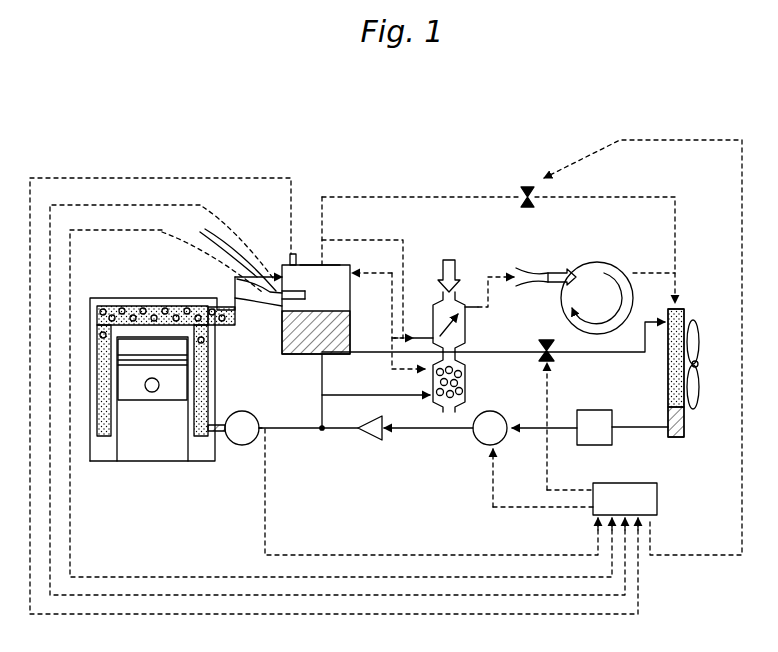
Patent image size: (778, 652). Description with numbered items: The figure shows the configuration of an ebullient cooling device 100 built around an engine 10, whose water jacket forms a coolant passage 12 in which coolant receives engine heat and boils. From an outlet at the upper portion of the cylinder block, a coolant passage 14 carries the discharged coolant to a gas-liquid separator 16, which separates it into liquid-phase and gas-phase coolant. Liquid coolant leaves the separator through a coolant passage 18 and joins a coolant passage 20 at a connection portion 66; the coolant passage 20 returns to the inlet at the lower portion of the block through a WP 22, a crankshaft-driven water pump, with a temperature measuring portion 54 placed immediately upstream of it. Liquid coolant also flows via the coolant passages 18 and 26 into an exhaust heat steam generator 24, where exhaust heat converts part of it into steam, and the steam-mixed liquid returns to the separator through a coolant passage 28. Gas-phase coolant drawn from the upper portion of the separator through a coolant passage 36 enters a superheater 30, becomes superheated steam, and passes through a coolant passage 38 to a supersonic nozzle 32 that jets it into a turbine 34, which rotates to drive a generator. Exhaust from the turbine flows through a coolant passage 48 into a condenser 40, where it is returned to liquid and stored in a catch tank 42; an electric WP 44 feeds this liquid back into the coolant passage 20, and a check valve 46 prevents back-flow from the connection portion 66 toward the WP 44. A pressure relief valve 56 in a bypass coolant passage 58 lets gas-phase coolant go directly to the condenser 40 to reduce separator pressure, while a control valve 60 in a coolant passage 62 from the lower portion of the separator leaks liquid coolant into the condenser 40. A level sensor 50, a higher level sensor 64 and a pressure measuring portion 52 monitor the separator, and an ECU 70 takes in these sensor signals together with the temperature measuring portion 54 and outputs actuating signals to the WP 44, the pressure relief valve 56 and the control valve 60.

The ebullient cooling device 100 is at (228, 158).
The engine 10 is at (152, 392).
The coolant passage 12 is at (106, 437).
The coolant passage 14 is at (265, 272).
The gas-liquid separator 16 is at (305, 264).
The coolant passage 18 is at (320, 376).
The coolant passage 20 is at (288, 426).
The WP (water pump) 22 is at (243, 446).
The exhaust heat steam generator 24 is at (467, 391).
The coolant passage 26 is at (368, 394).
The coolant passage 28 is at (391, 330).
The superheater 30 is at (467, 327).
The supersonic nozzle 32 is at (536, 273).
The turbine 34 is at (596, 261).
The coolant passage 36 is at (358, 239).
The coolant passage 38 is at (490, 276).
The condenser 40 is at (688, 312).
The catch tank 42 is at (597, 409).
The WP (water pump) 44 is at (487, 448).
The check valve 46 is at (366, 433).
The coolant passage 48 is at (648, 271).
The level sensor 50 is at (234, 291).
The pressure measuring portion 52 is at (290, 250).
The temperature measuring portion 54 is at (268, 442).
The pressure relief valve 56 is at (523, 186).
The coolant passage 58 is at (668, 196).
The control valve 60 is at (546, 339).
The coolant passage 62 is at (620, 354).
The level sensor 64 is at (337, 400).
The connection portion 66 is at (320, 430).
The ECU (electronic control unit) 70 is at (660, 498).